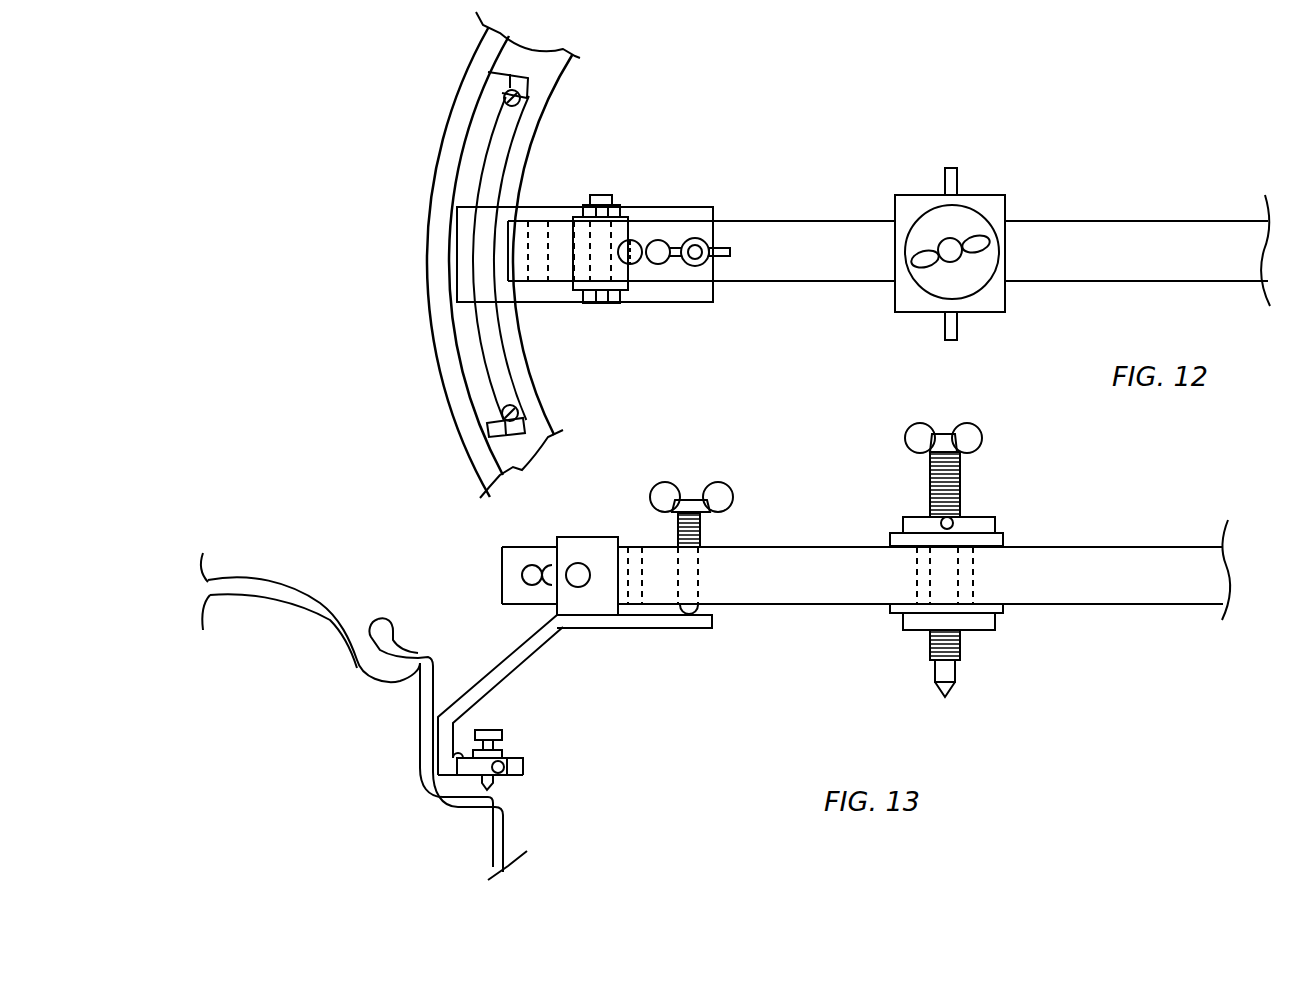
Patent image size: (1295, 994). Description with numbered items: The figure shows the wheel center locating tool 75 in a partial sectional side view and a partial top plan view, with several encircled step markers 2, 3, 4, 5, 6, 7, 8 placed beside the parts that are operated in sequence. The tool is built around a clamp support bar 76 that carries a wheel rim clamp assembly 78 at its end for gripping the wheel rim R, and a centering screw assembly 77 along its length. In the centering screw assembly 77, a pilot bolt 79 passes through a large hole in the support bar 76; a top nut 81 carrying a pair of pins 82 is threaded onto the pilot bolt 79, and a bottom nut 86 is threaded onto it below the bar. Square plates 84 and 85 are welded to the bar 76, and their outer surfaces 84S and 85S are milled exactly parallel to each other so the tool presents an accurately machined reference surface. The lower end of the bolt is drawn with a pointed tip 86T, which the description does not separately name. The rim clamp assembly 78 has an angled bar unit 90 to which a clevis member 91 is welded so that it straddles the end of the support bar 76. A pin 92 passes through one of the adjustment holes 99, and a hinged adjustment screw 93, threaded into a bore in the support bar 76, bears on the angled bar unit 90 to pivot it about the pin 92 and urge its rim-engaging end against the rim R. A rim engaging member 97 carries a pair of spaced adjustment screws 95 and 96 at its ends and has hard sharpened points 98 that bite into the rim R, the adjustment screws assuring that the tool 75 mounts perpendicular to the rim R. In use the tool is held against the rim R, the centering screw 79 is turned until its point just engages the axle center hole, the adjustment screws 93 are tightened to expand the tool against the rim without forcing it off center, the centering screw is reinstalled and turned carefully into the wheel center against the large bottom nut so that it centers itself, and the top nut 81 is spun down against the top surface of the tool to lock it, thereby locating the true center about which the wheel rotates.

In FIG. 12, the wheel rim R is at (425, 325).
In FIG. 13, the wheel rim R is at (513, 823).
In FIG. 13, the wheel center locating tool 75 is at (808, 685).
In FIG. 12, the clamp support bar 76 is at (1152, 221).
In FIG. 13, the clamp support bar 76 is at (1168, 546).
In FIG. 13, the centering screw assembly 77 is at (1043, 486).
In FIG. 12, the wheel rim clamp assembly 78 is at (590, 136).
In FIG. 12, the pilot bolt 79 is at (949, 248).
In FIG. 13, the pilot bolt 79 is at (968, 479).
In FIG. 12, the top nut 81 is at (968, 215).
In FIG. 13, the top nut 81 is at (975, 520).
In FIG. 12, the pins 82 is at (953, 174).
In FIG. 13, the pins 82 is at (928, 487).
In FIG. 13, the square plate 84 is at (1003, 612).
In FIG. 13, the outer surface of square plate 84S is at (893, 613).
In FIG. 13, the square plate 85 is at (893, 540).
In FIG. 12, the outer surface of square plate 85S is at (990, 212).
In FIG. 13, the outer surface of square plate 85S is at (1005, 535).
In FIG. 13, the bottom nut 86 is at (970, 566).
In FIG. 13, the shaft tip 86T is at (957, 673).
In FIG. 13, the angled bar unit 90 is at (543, 648).
In FIG. 13, the clevis member 91 is at (619, 616).
In FIG. 13, the pin 92 is at (579, 571).
In FIG. 13, the hinged adjustment screw 93 is at (689, 494).
In FIG. 12, the adjustment screw 95 is at (516, 410).
In FIG. 12, the adjustment screw 96 is at (517, 106).
In FIG. 13, the adjustment screw 96 is at (545, 758).
In FIG. 12, the rim engaging member 97 is at (492, 177).
In FIG. 12, the hard sharpened points 98 is at (487, 78).
In FIG. 13, the adjustment holes 99 is at (646, 549).
In FIG. 13, the step indicator 2 is at (733, 483).
In FIG. 12, the step indicator 3 is at (620, 191).
In FIG. 12, the step indicator 4 is at (657, 265).
In FIG. 13, the step indicator 5 is at (531, 566).
In FIG. 12, the step indicator 6 is at (476, 434).
In FIG. 13, the step indicator 7 is at (508, 737).
In FIG. 13, the step indicator 8 is at (1008, 540).